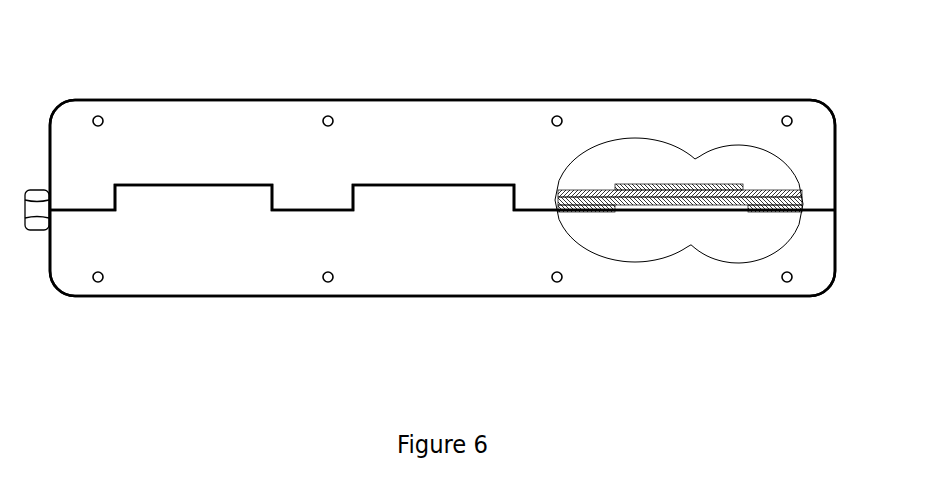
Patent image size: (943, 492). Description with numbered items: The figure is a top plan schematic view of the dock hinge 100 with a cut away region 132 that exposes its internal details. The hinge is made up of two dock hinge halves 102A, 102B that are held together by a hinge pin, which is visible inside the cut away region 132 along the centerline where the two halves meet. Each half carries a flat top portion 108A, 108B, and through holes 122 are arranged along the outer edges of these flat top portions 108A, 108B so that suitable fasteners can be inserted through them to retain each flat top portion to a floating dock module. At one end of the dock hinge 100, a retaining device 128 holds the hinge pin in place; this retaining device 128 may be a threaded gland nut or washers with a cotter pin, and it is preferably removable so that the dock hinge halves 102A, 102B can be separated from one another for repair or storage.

The dock hinge 100 is at (563, 60).
The dock hinge half 102A is at (170, 60).
The dock hinge half 102B is at (217, 339).
The flat top portion 108A is at (413, 147).
The flat top portion 108B is at (270, 280).
The through holes 122 is at (324, 117).
The retaining device 128 is at (33, 232).
The cut away region 132 is at (697, 270).